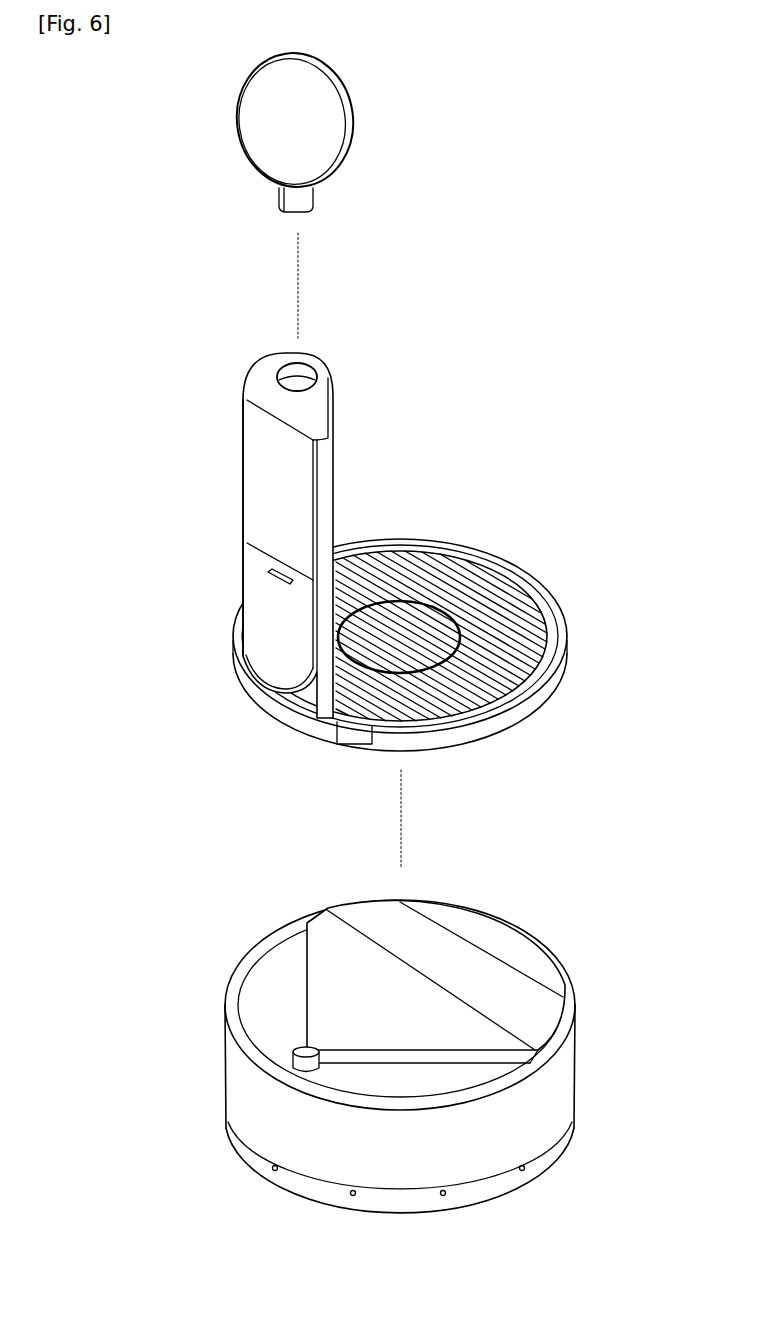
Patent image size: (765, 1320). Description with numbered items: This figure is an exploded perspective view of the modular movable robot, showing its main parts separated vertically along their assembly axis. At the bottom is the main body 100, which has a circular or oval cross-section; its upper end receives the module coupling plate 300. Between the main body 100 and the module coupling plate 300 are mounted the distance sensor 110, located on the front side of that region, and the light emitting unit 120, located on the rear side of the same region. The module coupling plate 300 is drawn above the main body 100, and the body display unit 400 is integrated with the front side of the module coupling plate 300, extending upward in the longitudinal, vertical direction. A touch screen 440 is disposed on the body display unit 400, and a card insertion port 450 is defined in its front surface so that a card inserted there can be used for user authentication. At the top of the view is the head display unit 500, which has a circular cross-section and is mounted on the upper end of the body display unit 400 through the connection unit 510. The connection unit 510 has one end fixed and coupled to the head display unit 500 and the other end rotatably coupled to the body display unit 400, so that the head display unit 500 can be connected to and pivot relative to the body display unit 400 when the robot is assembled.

The main body 100 is at (410, 1041).
The distance sensor 110 is at (247, 1048).
The light emitting unit 120 is at (497, 935).
The module coupling plate 300 is at (543, 593).
The body display unit 400 is at (298, 535).
The touch screen 440 is at (250, 460).
The card insertion port 450 is at (268, 573).
The head display unit 500 is at (353, 127).
The connection unit 510 is at (303, 199).